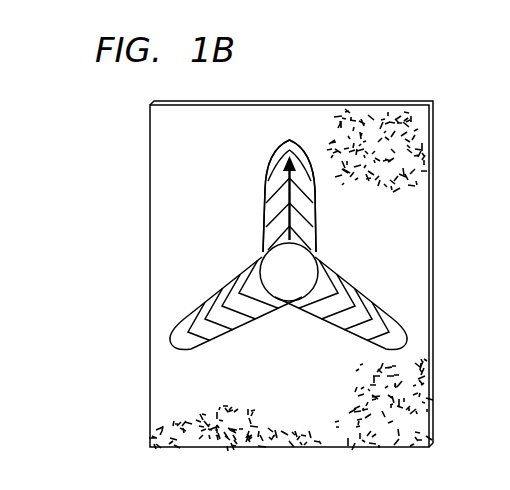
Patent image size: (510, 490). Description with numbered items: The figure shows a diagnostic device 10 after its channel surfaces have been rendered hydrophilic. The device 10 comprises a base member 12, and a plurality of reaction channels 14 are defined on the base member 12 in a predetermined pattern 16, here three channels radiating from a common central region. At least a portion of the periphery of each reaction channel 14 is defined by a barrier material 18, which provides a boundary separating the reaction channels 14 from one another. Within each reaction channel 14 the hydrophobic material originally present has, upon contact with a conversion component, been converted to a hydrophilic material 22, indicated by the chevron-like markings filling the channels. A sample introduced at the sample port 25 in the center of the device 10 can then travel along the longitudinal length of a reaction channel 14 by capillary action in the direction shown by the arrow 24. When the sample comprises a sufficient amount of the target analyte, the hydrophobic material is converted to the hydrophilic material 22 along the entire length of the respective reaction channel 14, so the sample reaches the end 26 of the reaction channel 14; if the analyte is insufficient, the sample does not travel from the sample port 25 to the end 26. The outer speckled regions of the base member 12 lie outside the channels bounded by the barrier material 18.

The diagnostic device 10 is at (107, 170).
The base member 12 is at (397, 273).
The reaction channel 14 is at (280, 222).
The predetermined pattern 16 is at (339, 220).
The barrier material 18 is at (266, 155).
The hydrophilic material 22 is at (278, 187).
The arrow 24 is at (285, 200).
The sample port 25 is at (279, 284).
The end of the reaction channel 26 is at (290, 140).